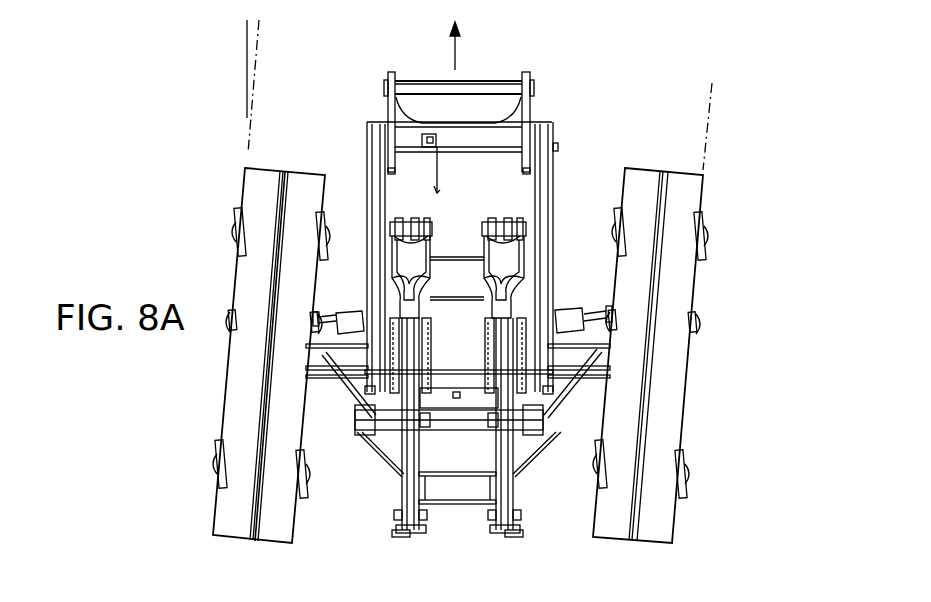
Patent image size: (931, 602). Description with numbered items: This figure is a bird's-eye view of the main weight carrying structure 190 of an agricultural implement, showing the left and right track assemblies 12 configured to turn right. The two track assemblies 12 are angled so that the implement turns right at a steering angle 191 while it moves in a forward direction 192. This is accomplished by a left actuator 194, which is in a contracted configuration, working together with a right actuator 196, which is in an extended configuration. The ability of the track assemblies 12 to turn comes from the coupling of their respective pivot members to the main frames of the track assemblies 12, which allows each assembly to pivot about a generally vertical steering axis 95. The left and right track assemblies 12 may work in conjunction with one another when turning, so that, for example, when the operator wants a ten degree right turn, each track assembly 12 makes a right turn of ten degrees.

The track assembly 12 is at (726, 300).
The steering axis 95 is at (267, 359).
The main weight carrying structure 190 is at (568, 42).
The steering angle 191 is at (251, 58).
The forward direction 192 is at (455, 50).
The left actuator 194 is at (351, 321).
The right actuator 196 is at (572, 318).